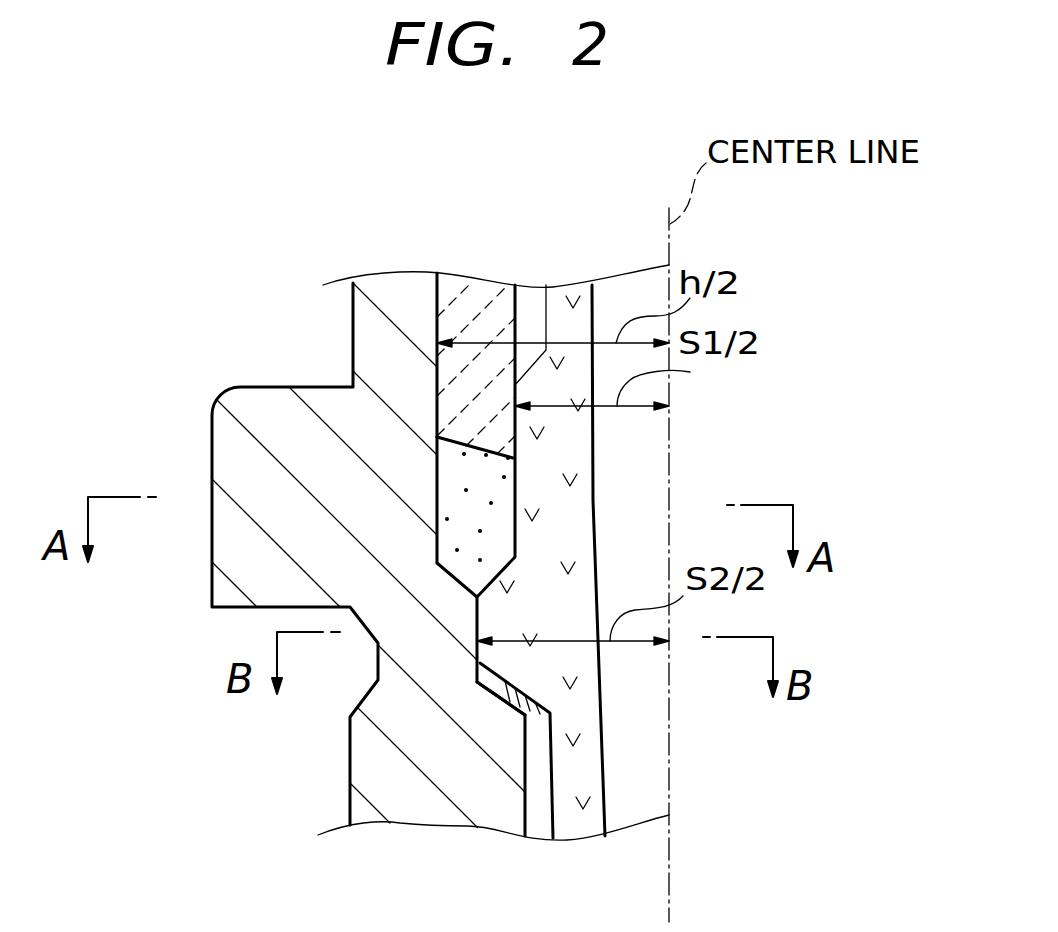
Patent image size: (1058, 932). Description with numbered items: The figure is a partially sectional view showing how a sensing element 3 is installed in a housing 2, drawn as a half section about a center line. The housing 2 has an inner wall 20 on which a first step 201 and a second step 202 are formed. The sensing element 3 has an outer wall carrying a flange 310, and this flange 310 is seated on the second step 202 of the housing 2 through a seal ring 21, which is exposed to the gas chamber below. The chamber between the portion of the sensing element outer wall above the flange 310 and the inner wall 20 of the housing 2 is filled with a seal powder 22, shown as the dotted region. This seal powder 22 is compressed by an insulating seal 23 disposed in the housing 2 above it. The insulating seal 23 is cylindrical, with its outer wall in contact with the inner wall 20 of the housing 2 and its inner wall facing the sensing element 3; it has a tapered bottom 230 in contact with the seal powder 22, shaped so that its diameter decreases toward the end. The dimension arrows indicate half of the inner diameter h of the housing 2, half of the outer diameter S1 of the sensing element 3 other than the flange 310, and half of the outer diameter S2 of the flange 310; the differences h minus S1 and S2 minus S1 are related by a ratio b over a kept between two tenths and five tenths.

The housing 2 is at (398, 295).
The inner wall 20 is at (442, 483).
The first step 201 is at (458, 587).
The second step 202 is at (500, 707).
The seal ring 21 is at (540, 713).
The seal powder 22 is at (482, 517).
The insulating seal 23 is at (483, 293).
The tapered bottom 230 is at (458, 443).
The sensing element 3 is at (577, 293).
The flange 310 is at (477, 651).